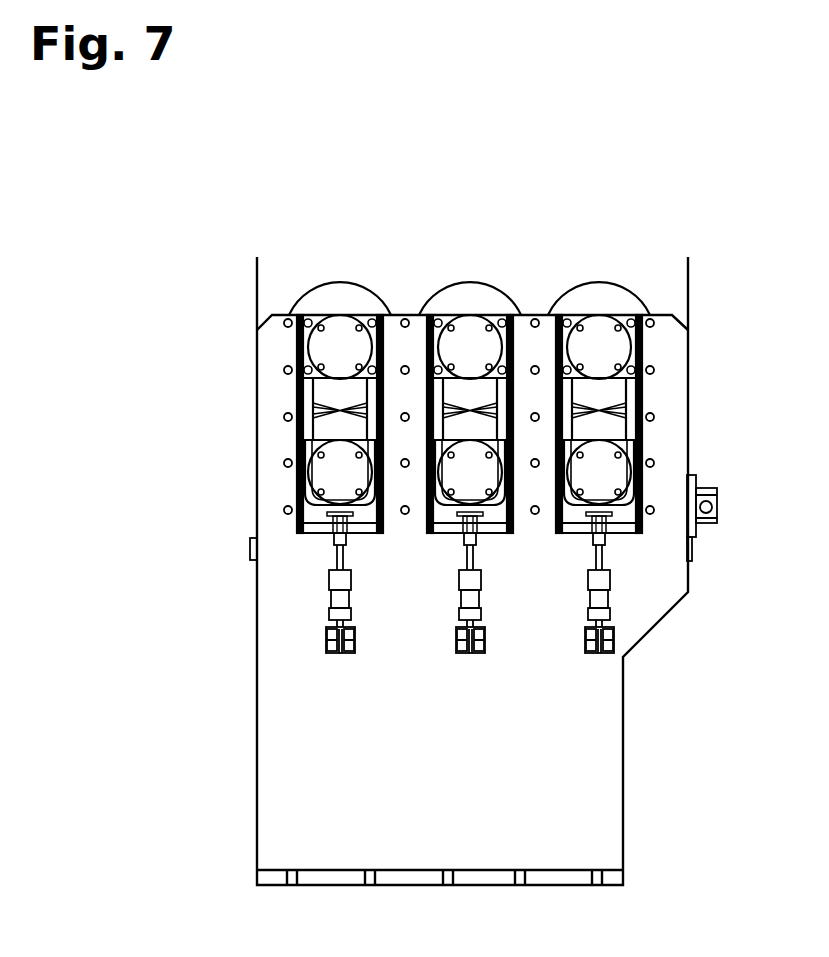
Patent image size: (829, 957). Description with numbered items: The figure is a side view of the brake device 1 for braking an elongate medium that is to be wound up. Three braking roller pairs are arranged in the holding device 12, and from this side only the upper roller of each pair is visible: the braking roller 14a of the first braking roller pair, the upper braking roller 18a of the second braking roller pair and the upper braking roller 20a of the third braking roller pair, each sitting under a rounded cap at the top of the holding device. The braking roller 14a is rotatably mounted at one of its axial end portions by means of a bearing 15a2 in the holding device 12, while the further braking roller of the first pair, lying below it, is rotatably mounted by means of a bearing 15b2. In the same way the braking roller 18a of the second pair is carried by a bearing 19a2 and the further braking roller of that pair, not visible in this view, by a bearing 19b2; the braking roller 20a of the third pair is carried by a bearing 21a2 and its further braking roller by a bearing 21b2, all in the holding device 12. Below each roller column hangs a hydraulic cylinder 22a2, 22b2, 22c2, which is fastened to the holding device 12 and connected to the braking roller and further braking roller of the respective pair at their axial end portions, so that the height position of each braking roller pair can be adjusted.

The device assembly 1 is at (187, 212).
The holding device 12 is at (272, 600).
The braking roller 14a is at (599, 249).
The bearing 15a2 is at (676, 347).
The bearing 15b2 is at (677, 463).
The upper braking roller 18a is at (470, 249).
The bearing 19a2 is at (450, 300).
The bearing 19b2 is at (330, 496).
The upper braking roller 20a is at (340, 249).
The bearing 21a2 is at (321, 300).
The bearing 21b2 is at (265, 472).
The hydraulic cylinder 22a2 is at (595, 635).
The hydraulic cylinder 22b2 is at (465, 635).
The hydraulic cylinder 22c2 is at (335, 635).